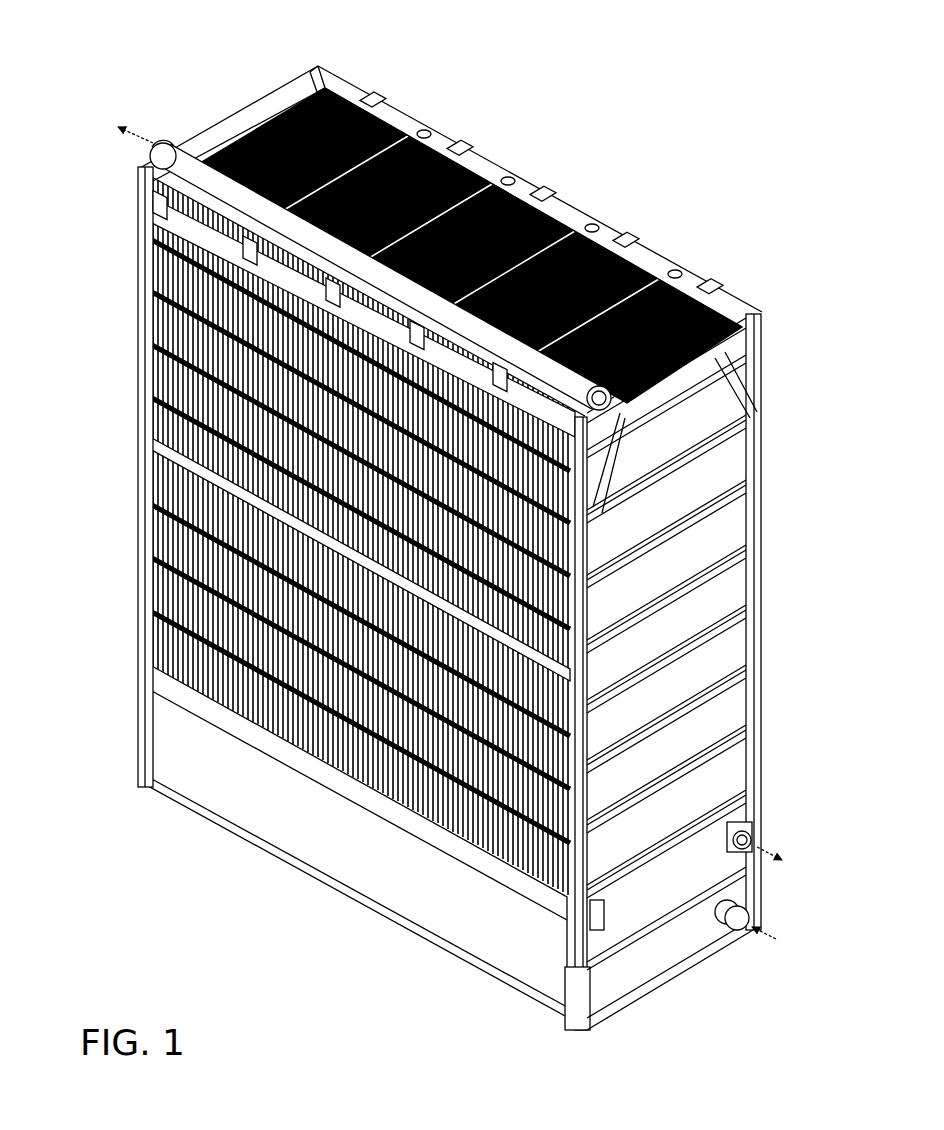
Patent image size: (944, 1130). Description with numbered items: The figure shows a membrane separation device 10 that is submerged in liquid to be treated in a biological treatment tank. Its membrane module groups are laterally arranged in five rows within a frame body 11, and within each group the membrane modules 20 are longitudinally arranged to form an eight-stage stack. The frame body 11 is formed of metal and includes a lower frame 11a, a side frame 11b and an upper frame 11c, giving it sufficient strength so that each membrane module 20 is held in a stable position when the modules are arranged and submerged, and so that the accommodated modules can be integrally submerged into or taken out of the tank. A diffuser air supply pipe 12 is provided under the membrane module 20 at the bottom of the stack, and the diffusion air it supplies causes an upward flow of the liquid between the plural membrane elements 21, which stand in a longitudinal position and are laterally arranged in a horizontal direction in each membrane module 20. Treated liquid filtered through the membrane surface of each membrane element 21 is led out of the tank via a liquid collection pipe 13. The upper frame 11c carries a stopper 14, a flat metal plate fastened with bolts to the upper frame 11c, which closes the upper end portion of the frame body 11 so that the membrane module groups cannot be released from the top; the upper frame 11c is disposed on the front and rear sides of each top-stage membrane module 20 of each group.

The membrane separation device 10 is at (454, 522).
The frame body 11 is at (443, 522).
The lower frame 11a is at (258, 755).
The side frame 11b is at (140, 387).
The upper frame 11c is at (510, 183).
The diffuser air supply pipe 12 is at (740, 933).
The liquid collection pipe 13 is at (188, 165).
The stopper 14 is at (397, 104).
The membrane module 20 is at (447, 455).
The membrane element 21 is at (352, 84).